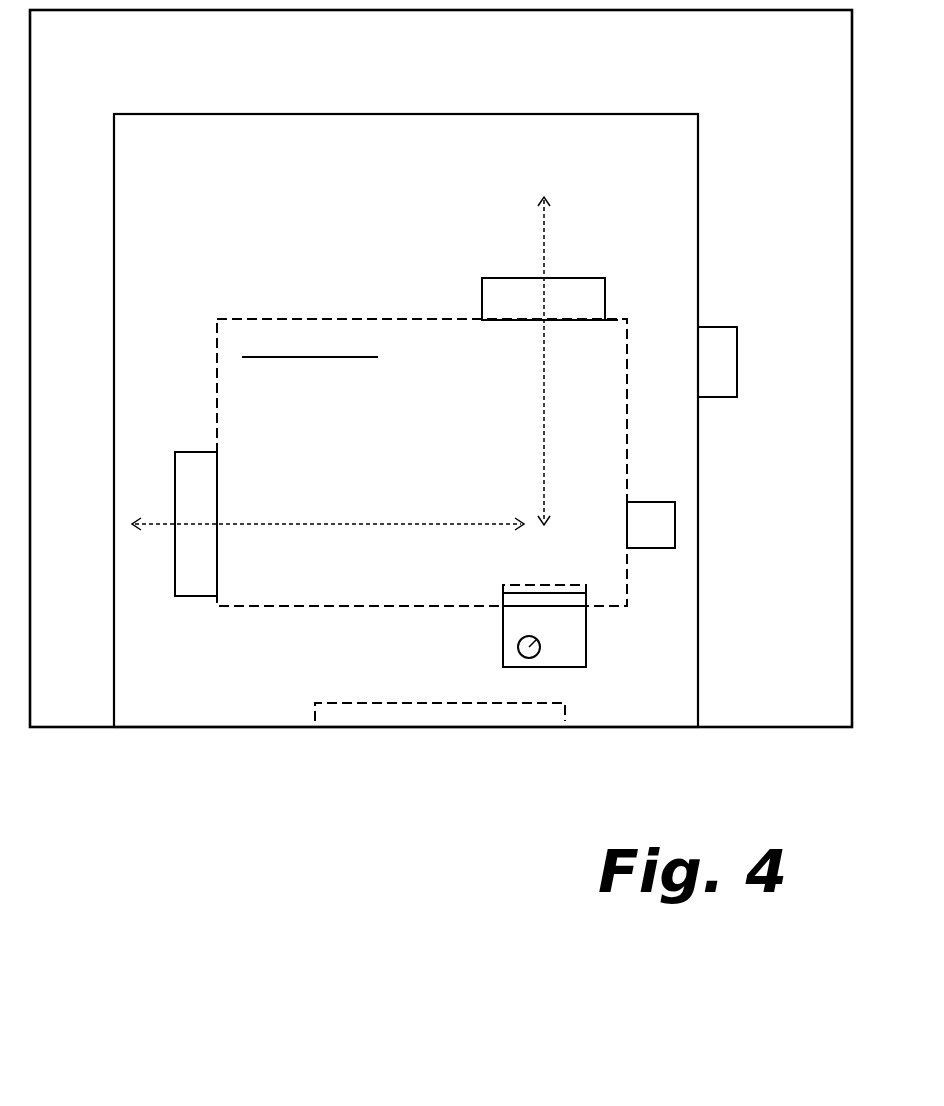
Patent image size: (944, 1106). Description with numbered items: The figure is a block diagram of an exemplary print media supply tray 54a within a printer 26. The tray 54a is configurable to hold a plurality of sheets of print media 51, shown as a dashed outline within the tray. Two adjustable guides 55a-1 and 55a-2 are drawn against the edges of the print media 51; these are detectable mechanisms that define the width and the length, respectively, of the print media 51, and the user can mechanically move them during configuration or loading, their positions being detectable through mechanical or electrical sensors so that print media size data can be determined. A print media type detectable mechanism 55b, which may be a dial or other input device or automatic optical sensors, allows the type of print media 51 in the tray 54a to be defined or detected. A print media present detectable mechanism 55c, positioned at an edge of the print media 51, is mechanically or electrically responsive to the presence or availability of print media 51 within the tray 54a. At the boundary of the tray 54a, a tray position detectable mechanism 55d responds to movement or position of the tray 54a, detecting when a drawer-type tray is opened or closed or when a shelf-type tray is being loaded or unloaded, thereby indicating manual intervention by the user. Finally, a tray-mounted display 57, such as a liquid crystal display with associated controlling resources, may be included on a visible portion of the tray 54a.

The printer 26 is at (129, 54).
The print media supply tray 54a is at (268, 182).
The print media 51 is at (388, 319).
The adjustable guide 55a-1 is at (553, 288).
The adjustable guide 55a-2 is at (186, 584).
The print media type detectable mechanism 55b is at (563, 637).
The print media present detectable mechanism 55c is at (647, 515).
The tray position detectable mechanism 55d is at (717, 360).
The tray-mounted display 57 is at (432, 709).